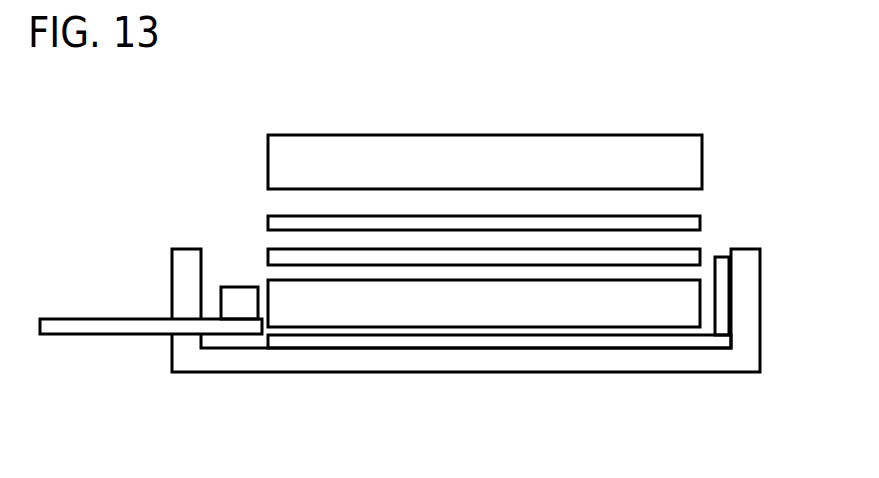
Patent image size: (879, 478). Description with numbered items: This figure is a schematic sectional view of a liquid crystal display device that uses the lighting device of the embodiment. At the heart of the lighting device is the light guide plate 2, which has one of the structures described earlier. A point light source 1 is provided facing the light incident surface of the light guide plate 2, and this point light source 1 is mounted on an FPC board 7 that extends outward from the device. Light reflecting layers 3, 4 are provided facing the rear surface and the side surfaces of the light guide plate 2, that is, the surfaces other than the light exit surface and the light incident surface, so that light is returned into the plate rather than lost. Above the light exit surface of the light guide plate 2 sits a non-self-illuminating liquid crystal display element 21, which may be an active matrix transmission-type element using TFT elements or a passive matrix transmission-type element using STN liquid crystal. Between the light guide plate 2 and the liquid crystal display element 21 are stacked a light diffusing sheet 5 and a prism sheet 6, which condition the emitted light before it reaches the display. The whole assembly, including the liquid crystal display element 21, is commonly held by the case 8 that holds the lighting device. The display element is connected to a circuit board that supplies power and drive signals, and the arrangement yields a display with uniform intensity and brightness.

The point light source 1 is at (243, 298).
The light guide plate 2 is at (638, 310).
The light reflecting layer 3 is at (358, 340).
The light reflecting layer 4 is at (723, 255).
The light diffusing sheet 5 is at (269, 250).
The prism sheet 6 is at (700, 217).
The FPC board 7 is at (107, 327).
The case 8 is at (746, 277).
The liquid crystal display element 21 is at (682, 133).